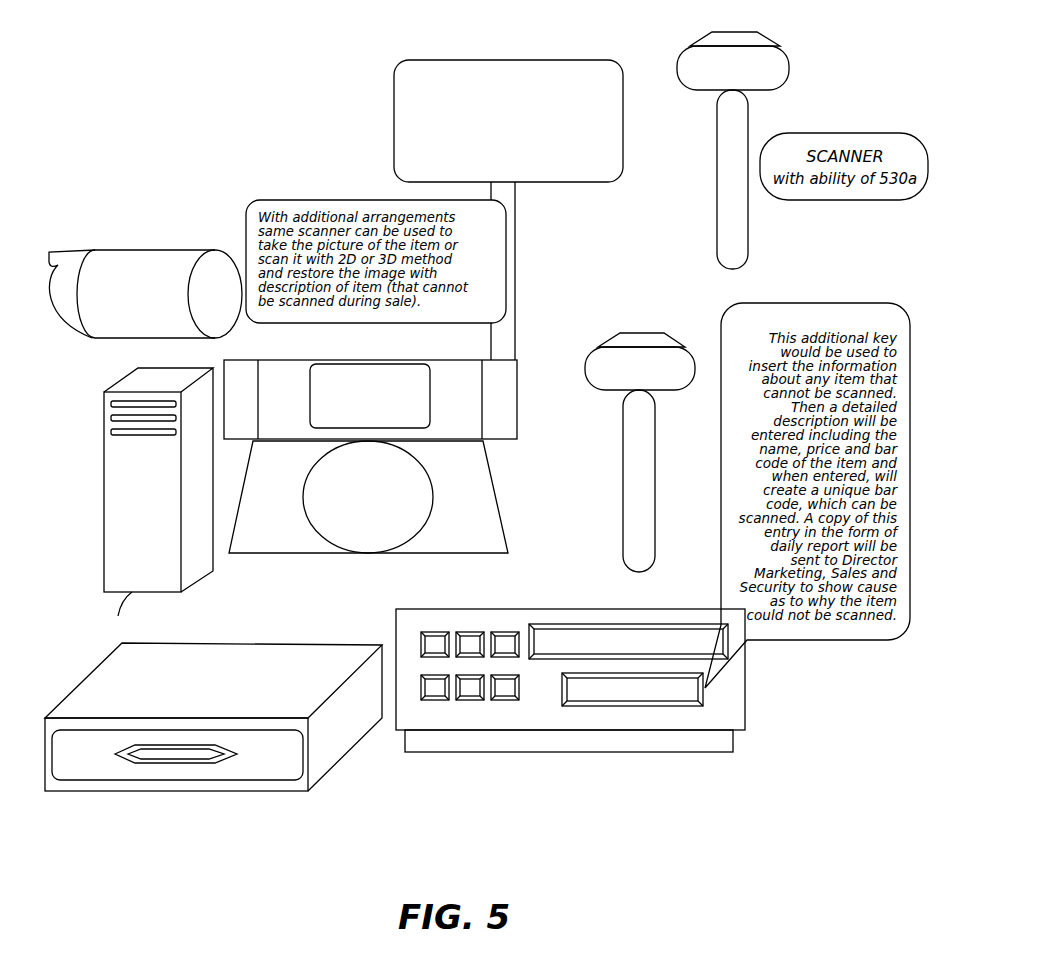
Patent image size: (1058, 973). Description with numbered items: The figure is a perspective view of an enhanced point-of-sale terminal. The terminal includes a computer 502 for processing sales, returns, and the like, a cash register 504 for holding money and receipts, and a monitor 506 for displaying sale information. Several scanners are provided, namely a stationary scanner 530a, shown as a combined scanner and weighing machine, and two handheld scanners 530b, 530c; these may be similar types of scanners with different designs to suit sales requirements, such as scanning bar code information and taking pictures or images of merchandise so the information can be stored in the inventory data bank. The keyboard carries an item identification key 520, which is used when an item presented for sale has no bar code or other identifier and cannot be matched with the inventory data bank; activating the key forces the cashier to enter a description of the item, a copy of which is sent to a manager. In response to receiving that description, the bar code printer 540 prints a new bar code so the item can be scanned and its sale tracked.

The computer 502 is at (104, 490).
The cash register 504 is at (323, 643).
The monitor 506 is at (507, 59).
The item identification key 520 is at (685, 706).
The stationary scanner 530a is at (375, 358).
The handheld scanner 530b is at (641, 333).
The handheld scanner 530c is at (733, 31).
The bar code printer 540 is at (158, 248).